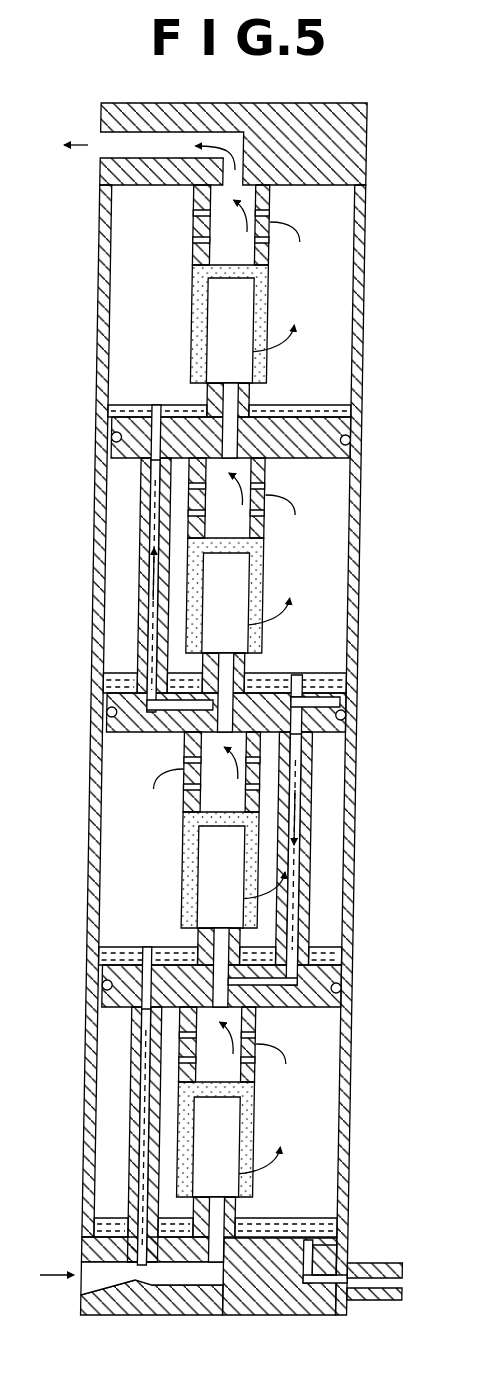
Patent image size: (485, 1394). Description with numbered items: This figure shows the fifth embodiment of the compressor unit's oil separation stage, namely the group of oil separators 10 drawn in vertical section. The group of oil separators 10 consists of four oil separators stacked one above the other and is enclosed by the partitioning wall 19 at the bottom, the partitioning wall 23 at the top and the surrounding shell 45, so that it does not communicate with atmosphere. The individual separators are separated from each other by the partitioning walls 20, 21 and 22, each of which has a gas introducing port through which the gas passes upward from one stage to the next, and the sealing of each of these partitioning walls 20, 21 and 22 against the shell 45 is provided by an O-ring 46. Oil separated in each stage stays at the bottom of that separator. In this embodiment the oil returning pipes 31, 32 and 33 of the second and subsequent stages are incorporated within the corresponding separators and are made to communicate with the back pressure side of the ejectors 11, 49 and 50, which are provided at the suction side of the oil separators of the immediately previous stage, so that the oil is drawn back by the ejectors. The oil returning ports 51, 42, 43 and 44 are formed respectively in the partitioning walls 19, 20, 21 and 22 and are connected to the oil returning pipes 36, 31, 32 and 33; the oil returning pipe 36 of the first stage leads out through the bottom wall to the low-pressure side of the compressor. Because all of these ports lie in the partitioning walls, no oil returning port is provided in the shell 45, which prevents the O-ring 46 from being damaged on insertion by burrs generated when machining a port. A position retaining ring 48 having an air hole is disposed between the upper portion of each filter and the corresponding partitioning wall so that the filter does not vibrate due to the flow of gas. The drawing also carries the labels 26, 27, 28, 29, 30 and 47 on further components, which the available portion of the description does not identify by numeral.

The group of oil separators 10 is at (362, 580).
The ejector 11 is at (113, 1283).
The partitioning wall 19 is at (280, 1285).
The partitioning wall 20 is at (318, 950).
The partitioning wall 21 is at (310, 696).
The partitioning wall 22 is at (299, 426).
The partitioning wall 23 is at (335, 147).
The first stage cylinder 26 is at (182, 1141).
The second stage cylinder 27 is at (187, 847).
The third stage cylinder 28 is at (195, 600).
The fourth stage cylinder 29 is at (197, 339).
The liquid layer 30 is at (137, 405).
The oil returning pipe 31 is at (134, 1091).
The oil returning pipe 32 is at (309, 801).
The oil returning pipe 33 is at (141, 556).
The oil returning pipe 36 is at (400, 1298).
The oil returning port 42 is at (141, 986).
The oil returning port 43 is at (303, 675).
The oil returning port 44 is at (152, 440).
The shell 45 is at (102, 291).
The O-ring 46 is at (106, 433).
The perforated post 47 is at (200, 224).
The position retaining ring 48 is at (263, 252).
The ejector 49 is at (277, 1007).
The ejector 50 is at (316, 727).
The oil returning port 51 is at (330, 1283).